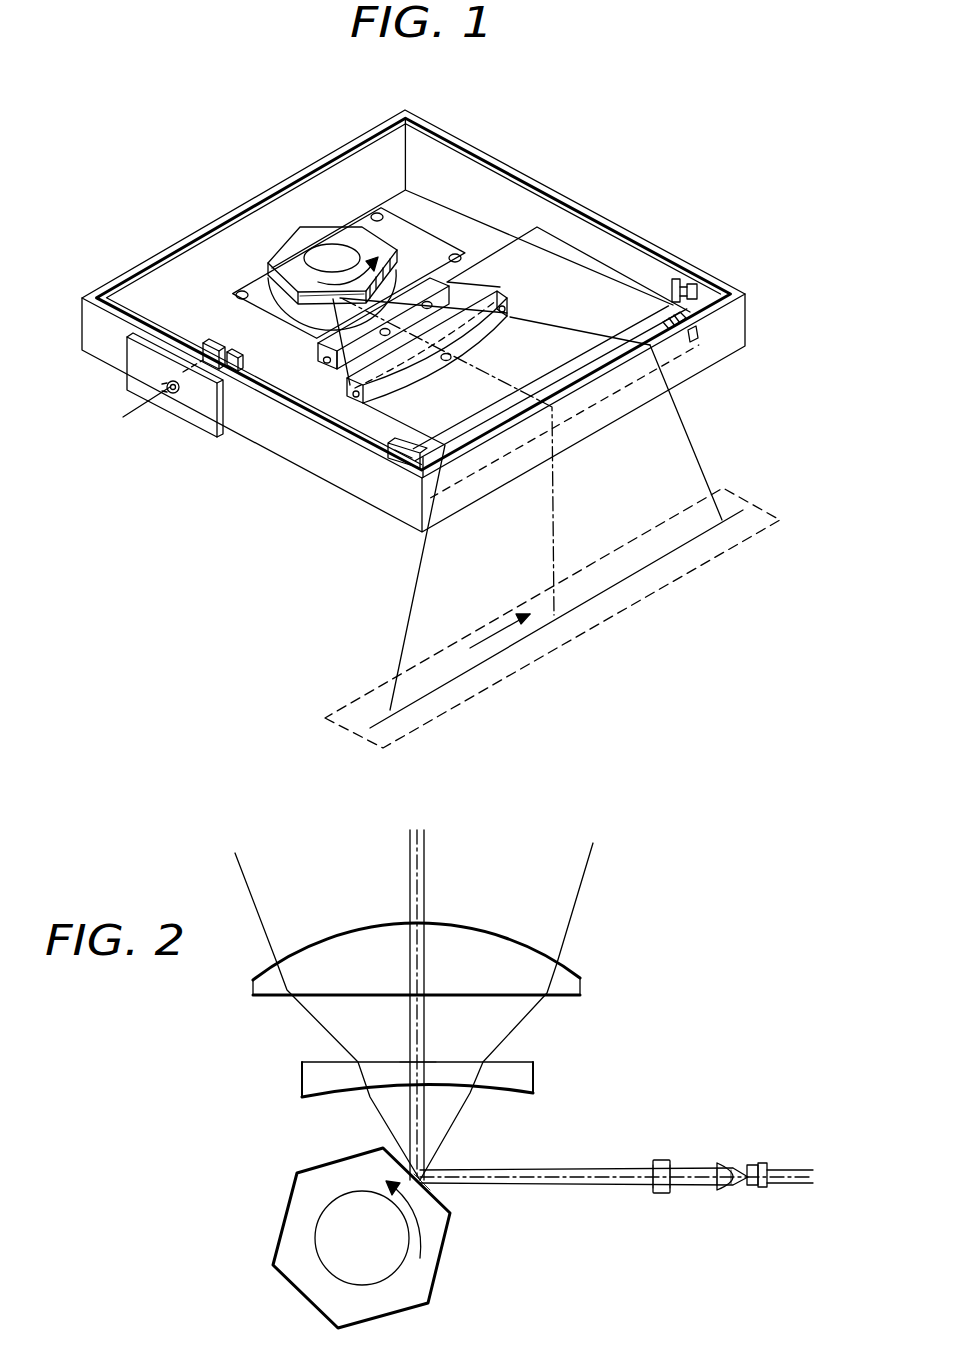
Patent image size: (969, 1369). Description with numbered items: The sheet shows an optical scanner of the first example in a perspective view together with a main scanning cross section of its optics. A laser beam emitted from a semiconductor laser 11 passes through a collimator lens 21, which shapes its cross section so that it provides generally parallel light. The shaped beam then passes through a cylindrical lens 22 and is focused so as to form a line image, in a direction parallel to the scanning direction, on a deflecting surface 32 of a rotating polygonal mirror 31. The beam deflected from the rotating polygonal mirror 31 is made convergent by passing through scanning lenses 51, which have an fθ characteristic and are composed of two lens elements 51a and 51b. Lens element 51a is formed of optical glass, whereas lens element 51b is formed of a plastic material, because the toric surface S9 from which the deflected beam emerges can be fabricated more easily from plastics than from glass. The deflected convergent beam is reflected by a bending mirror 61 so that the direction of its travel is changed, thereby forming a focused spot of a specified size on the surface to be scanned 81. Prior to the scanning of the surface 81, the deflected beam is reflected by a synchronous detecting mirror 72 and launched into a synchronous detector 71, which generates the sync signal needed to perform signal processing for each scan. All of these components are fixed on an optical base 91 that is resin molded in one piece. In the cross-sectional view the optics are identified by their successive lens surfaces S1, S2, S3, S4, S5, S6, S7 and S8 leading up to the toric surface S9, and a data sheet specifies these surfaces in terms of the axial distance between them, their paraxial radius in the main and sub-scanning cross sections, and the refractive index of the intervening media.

In FIG. 1, the semiconductor laser 11 is at (188, 392).
In FIG. 2, the semiconductor laser 11 is at (763, 1187).
In FIG. 1, the collimator lens 21 is at (165, 379).
In FIG. 2, the collimator lens 21 is at (728, 1221).
In FIG. 1, the cylindrical lens 22 is at (215, 345).
In FIG. 2, the cylindrical lens 22 is at (672, 1187).
In FIG. 1, the rotating polygonal mirror 31 is at (349, 258).
In FIG. 2, the rotating polygonal mirror 31 is at (416, 1212).
In FIG. 1, the deflecting surface 32 is at (337, 298).
In FIG. 2, the deflecting surface 32 is at (485, 1144).
In FIG. 1, the scanning lenses 51 is at (470, 234).
In FIG. 1, the lens element 51a is at (443, 278).
In FIG. 2, the lens element 51a is at (445, 1070).
In FIG. 1, the lens element 51b is at (507, 292).
In FIG. 2, the lens element 51b is at (416, 951).
In FIG. 1, the bending mirror 61 is at (620, 378).
In FIG. 1, the synchronous detector 71 is at (688, 280).
In FIG. 1, the synchronous detecting mirror 72 is at (407, 477).
In FIG. 1, the surface to be scanned 81 is at (670, 552).
In FIG. 1, the optical base 91 is at (344, 173).
In FIG. 2, the lens surface S1 is at (740, 1180).
In FIG. 2, the lens surface S2 is at (717, 1180).
In FIG. 2, the lens surface S3 is at (672, 1178).
In FIG. 2, the lens surface S4 is at (650, 1177).
In FIG. 2, the lens surface S5 is at (425, 1172).
In FIG. 2, the lens surface S6 is at (410, 1097).
In FIG. 2, the lens surface S7 is at (417, 1062).
In FIG. 2, the lens surface S8 is at (417, 995).
In FIG. 2, the toric surface S9 is at (415, 925).